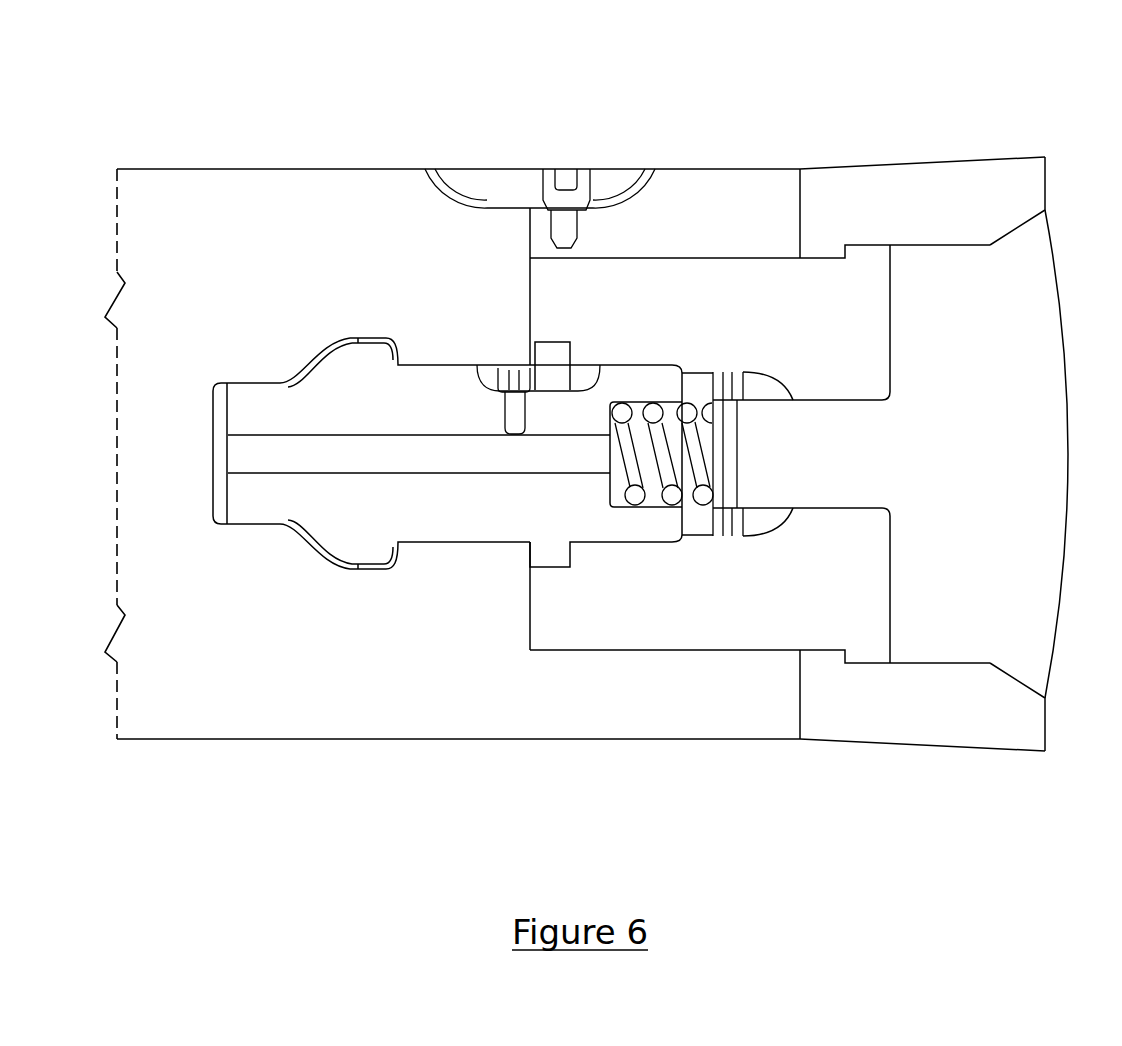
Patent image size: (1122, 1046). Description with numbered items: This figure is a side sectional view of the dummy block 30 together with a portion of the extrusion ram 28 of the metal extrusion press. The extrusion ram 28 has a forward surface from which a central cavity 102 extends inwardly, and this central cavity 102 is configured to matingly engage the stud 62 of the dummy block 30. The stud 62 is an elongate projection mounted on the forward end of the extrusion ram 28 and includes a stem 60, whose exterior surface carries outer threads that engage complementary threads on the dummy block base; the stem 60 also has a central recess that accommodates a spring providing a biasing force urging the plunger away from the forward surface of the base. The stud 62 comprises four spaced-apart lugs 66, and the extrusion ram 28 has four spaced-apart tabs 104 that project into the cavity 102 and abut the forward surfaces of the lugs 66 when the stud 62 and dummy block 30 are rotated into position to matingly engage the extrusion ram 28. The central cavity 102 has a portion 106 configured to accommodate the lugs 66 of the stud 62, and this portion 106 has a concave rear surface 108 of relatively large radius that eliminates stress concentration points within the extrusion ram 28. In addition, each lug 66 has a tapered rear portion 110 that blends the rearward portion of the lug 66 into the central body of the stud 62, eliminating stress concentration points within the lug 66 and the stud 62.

The extrusion ram 28 is at (200, 187).
The dummy block 30 is at (945, 96).
The stem 60 is at (630, 527).
The stud 62 is at (246, 500).
The lugs 66 is at (374, 553).
The central cavity 102 is at (411, 345).
The tabs 104 is at (466, 362).
The portion 106 is at (369, 321).
The concave rear surface 108 is at (306, 338).
The tapered rear portion 110 is at (318, 542).